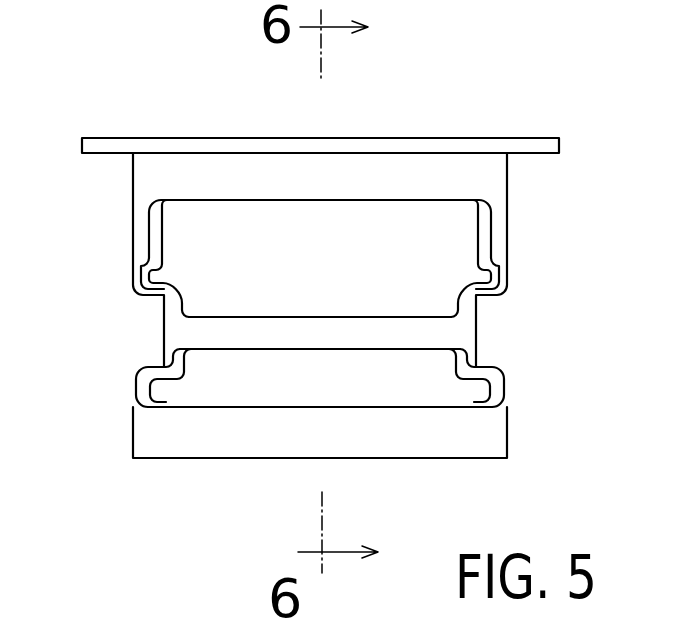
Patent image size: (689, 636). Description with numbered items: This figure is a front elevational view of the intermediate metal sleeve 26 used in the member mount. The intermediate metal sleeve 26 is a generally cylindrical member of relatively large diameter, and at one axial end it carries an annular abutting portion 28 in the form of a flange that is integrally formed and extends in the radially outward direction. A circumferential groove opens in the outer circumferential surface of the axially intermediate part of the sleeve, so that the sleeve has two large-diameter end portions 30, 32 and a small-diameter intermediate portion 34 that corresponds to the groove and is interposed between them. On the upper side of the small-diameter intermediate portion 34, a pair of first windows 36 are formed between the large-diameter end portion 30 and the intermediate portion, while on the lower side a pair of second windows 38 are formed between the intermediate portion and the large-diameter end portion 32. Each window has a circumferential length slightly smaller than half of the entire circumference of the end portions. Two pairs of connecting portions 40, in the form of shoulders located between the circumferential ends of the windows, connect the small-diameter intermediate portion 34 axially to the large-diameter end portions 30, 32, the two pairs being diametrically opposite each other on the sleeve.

The intermediate metal sleeve 26 is at (481, 68).
The annular abutting portion 28 is at (102, 148).
The large-diameter end portion 30 is at (322, 160).
The large-diameter end portion 32 is at (452, 442).
The small-diameter intermediate portion 34 is at (395, 330).
The first windows 36 is at (448, 203).
The second windows 38 is at (232, 350).
The connecting portions 40 is at (163, 290).